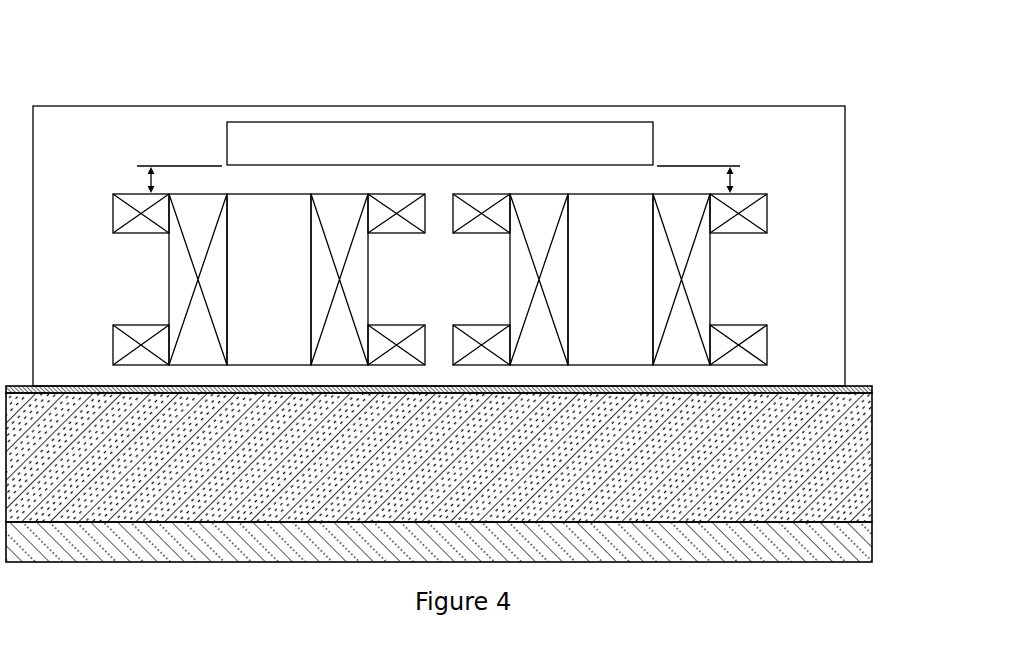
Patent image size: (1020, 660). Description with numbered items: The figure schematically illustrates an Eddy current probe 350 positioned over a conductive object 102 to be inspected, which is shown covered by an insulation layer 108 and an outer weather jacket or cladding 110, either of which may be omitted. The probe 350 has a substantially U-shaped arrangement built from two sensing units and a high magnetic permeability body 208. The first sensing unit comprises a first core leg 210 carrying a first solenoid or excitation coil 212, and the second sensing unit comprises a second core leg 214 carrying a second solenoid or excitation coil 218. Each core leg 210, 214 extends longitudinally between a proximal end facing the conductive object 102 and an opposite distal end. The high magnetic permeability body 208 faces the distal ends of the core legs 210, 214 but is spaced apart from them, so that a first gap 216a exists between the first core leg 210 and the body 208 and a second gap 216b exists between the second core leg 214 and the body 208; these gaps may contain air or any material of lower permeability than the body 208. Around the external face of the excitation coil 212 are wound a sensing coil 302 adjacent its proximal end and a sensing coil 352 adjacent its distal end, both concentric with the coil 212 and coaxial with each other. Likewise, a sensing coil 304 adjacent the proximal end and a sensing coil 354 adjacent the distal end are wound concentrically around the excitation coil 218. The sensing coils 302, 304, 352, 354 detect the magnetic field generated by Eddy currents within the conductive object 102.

The Eddy current probe 350 is at (160, 90).
The high magnetic permeability body 208 is at (653, 150).
The first gap 216a is at (142, 183).
The second gap 216b is at (755, 165).
The sensing coil 352 is at (113, 212).
The sensing coil 302 is at (147, 323).
The first solenoid or coil 212 is at (169, 258).
The first core leg 210 is at (236, 279).
The second solenoid or coil 218 is at (510, 253).
The second core leg 214 is at (576, 279).
The sensing coil 354 is at (768, 209).
The second sensing coil 304 is at (730, 324).
The weather jacket or cladding 110 is at (872, 385).
The insulation layer 108 is at (872, 440).
The conductive object 102 is at (773, 563).